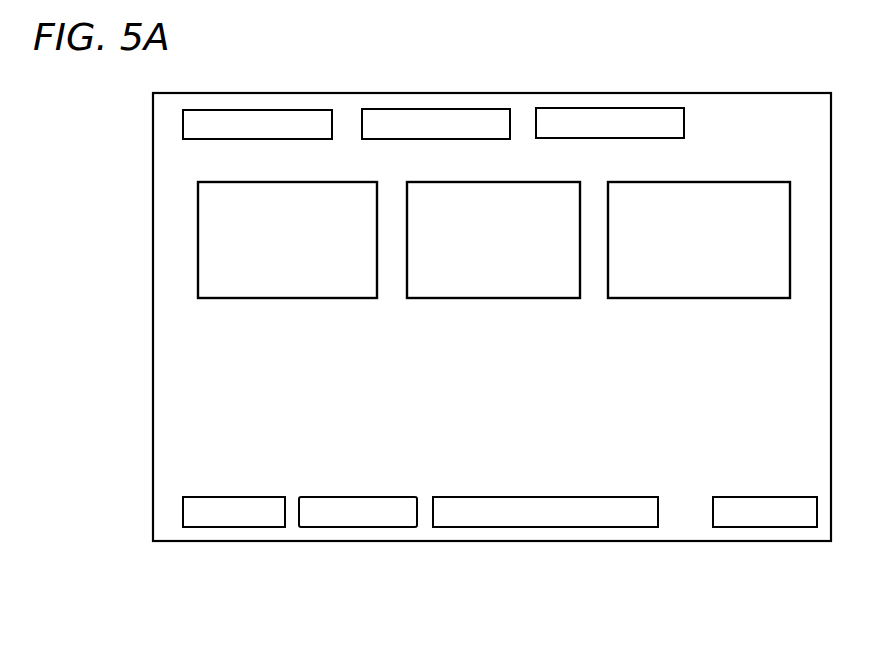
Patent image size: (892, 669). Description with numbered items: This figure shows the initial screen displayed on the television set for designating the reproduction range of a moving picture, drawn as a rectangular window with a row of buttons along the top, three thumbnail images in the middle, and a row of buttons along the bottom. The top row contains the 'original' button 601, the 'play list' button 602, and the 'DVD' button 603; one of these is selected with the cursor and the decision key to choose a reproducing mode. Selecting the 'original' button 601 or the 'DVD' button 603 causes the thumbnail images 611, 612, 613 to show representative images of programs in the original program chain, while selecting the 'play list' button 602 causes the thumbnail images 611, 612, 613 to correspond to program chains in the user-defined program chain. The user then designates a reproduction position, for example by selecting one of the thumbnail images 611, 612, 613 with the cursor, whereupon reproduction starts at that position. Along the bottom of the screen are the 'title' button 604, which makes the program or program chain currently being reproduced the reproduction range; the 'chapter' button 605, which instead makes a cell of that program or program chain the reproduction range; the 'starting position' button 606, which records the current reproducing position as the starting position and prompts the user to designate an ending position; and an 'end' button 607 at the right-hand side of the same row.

The 'original' button 601 is at (268, 110).
The 'play list' button 602 is at (438, 109).
The 'DVD' button 603 is at (610, 108).
The 'title' button 604 is at (230, 527).
The 'chapter' button 605 is at (353, 527).
The 'starting position' button 606 is at (547, 527).
The END button 607 is at (762, 527).
The thumbnail image 611 is at (283, 298).
The thumbnail image 612 is at (492, 298).
The thumbnail image 613 is at (697, 298).